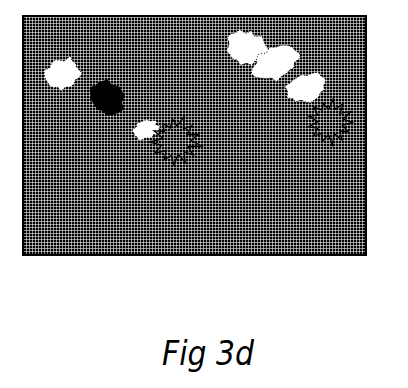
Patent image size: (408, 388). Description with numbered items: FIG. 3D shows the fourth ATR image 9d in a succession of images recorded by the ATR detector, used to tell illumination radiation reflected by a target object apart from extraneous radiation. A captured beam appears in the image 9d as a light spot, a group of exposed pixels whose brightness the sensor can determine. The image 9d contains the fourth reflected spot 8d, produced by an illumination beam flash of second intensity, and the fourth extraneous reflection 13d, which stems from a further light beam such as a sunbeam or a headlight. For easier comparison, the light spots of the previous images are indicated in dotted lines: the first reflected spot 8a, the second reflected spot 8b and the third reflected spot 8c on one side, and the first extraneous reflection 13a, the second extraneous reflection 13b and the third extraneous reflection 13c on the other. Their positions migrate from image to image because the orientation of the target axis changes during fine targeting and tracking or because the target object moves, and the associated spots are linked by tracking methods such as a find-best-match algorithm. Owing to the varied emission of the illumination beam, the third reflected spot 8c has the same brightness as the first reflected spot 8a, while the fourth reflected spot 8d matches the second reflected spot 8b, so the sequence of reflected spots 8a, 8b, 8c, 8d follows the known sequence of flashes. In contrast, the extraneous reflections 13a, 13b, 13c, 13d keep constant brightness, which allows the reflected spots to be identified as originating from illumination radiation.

The first reflected spot 8a is at (109, 60).
The second reflected spot 8b is at (149, 84).
The third reflected spot 8c is at (150, 131).
The fourth reflected spot 8d is at (137, 147).
The ATR image 9d is at (194, 150).
The first extraneous reflection 13a is at (242, 50).
The second extraneous reflection 13b is at (243, 77).
The third extraneous reflection 13c is at (272, 104).
The fourth extraneous reflection 13d is at (287, 136).